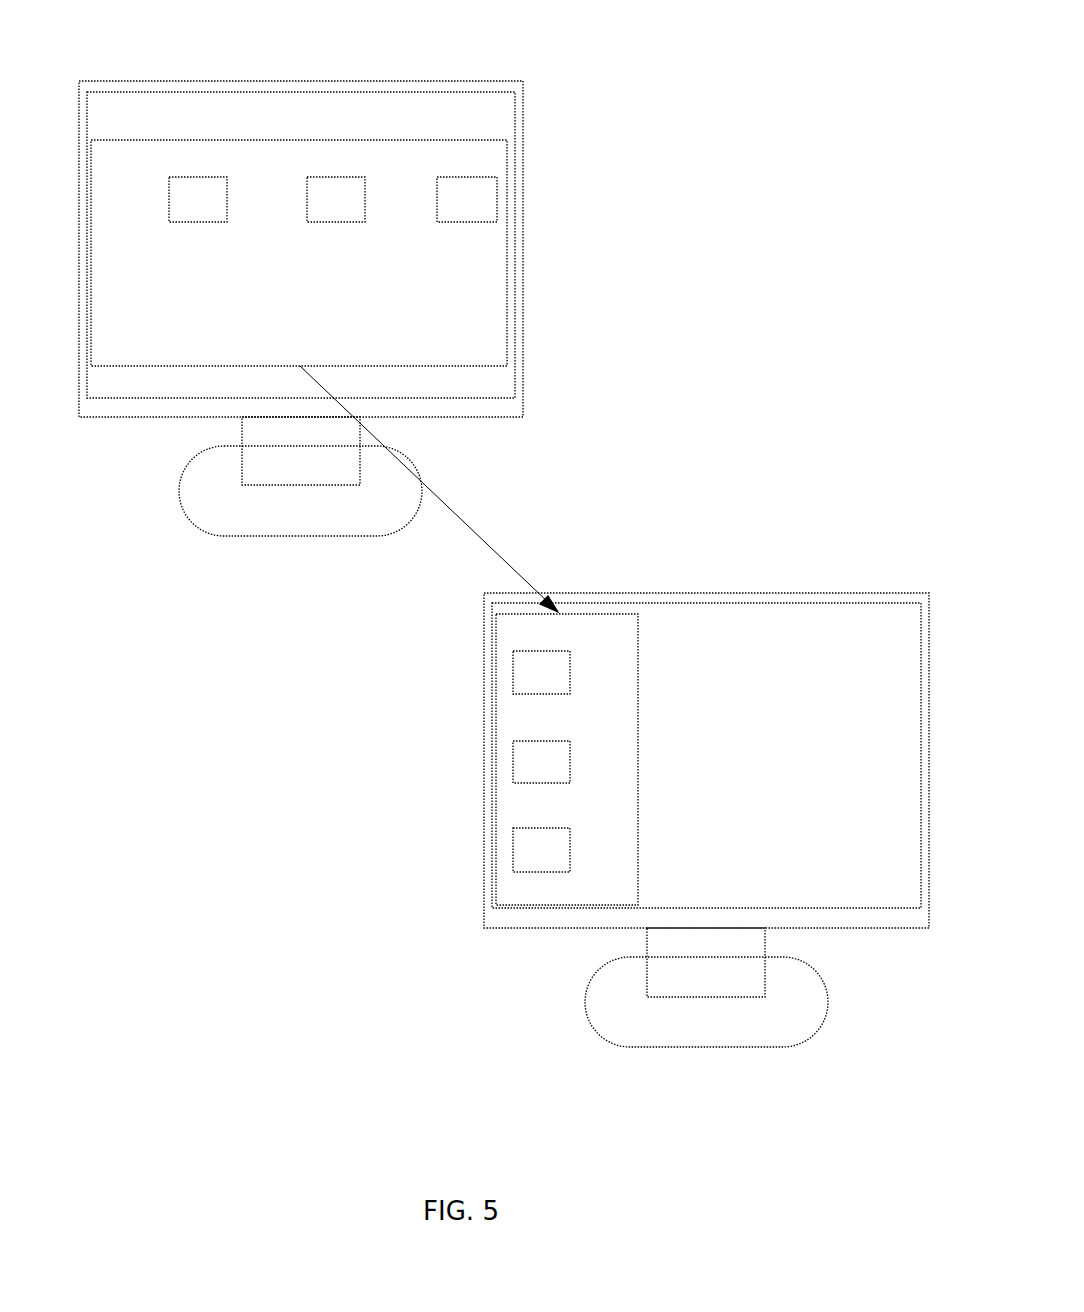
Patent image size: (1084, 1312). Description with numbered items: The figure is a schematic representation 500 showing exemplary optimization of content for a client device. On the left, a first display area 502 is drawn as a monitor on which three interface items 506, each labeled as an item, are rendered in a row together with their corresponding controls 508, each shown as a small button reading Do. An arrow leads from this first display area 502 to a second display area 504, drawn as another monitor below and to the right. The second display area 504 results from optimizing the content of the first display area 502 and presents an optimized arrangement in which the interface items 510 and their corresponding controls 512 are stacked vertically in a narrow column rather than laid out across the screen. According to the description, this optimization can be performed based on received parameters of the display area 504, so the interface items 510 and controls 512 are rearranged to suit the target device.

The schematic representation 500 is at (810, 93).
The display area 502 is at (507, 336).
The display area 504 is at (593, 613).
The interface items 506 is at (147, 225).
The controls 508 is at (199, 176).
The interface items 510 is at (630, 641).
The controls 512 is at (513, 673).